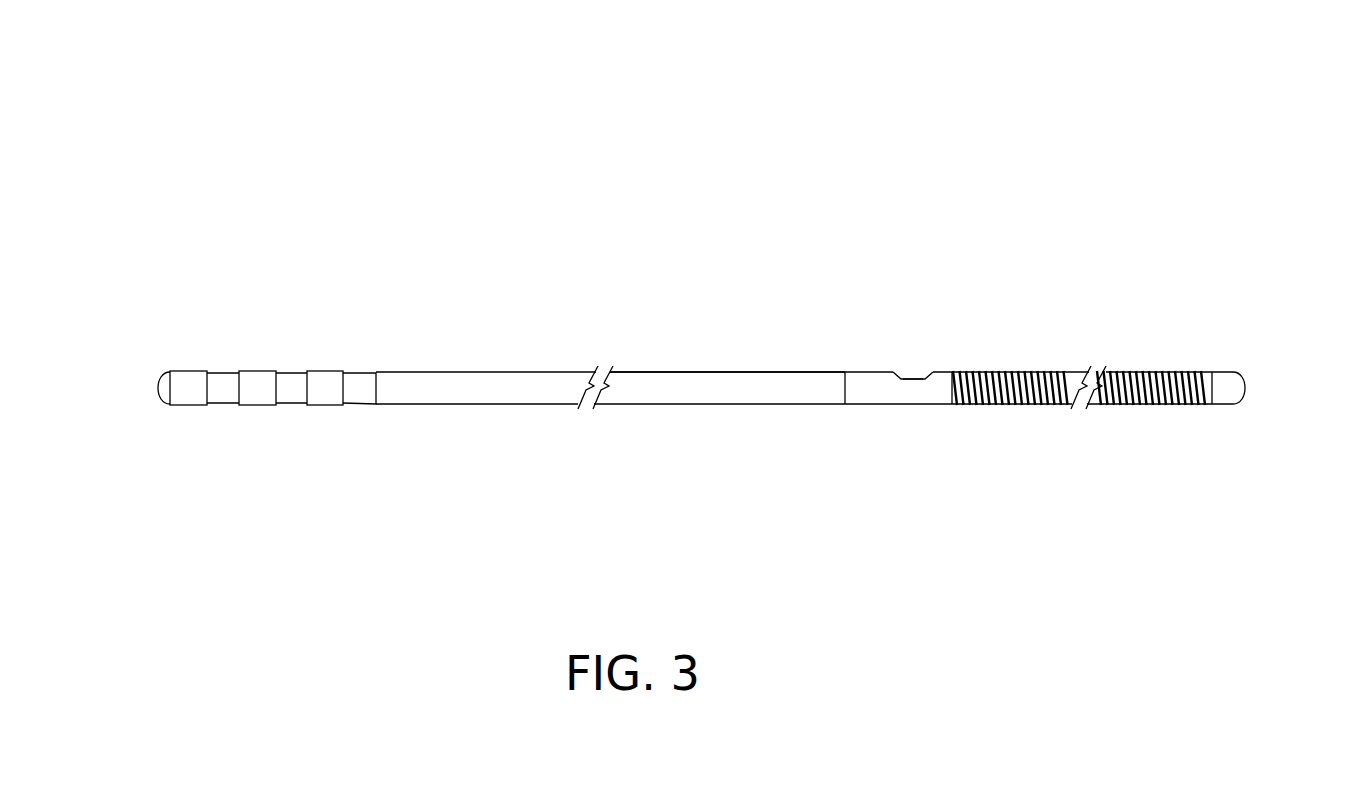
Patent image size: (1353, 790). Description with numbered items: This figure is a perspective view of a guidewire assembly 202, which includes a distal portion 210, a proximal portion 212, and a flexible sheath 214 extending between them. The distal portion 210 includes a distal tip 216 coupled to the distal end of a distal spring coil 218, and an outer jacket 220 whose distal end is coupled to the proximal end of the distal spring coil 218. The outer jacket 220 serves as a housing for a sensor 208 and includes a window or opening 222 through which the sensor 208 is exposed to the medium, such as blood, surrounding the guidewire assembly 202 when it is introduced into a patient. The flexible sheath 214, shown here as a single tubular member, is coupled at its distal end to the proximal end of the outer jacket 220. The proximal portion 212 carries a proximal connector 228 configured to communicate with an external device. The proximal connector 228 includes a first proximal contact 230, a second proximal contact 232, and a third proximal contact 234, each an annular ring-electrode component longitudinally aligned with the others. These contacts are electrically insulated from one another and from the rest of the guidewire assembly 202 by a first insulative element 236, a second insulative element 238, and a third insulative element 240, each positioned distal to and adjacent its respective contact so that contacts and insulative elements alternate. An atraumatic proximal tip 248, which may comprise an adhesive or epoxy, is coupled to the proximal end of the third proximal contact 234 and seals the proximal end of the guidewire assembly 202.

The guidewire assembly 202 is at (630, 132).
The sensor 208 is at (928, 379).
The distal portion 210 is at (1148, 357).
The proximal portion 212 is at (410, 444).
The flexible sheath 214 is at (737, 372).
The distal tip 216 is at (1237, 372).
The distal spring coil 218 is at (1045, 405).
The outer jacket 220 is at (915, 405).
The window or opening 222 is at (908, 372).
The proximal connector 228 is at (267, 322).
The first proximal contact 230 is at (332, 371).
The second proximal contact 232 is at (258, 371).
The third proximal contact 234 is at (188, 371).
The first insulative element 236 is at (357, 406).
The second insulative element 238 is at (290, 406).
The third insulative element 240 is at (222, 406).
The proximal tip 248 is at (157, 387).